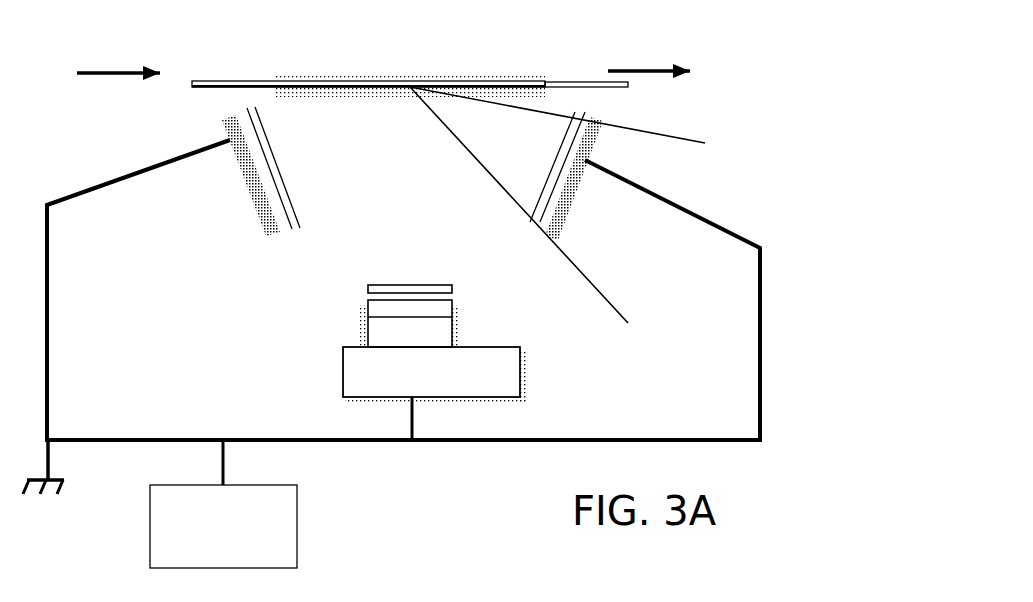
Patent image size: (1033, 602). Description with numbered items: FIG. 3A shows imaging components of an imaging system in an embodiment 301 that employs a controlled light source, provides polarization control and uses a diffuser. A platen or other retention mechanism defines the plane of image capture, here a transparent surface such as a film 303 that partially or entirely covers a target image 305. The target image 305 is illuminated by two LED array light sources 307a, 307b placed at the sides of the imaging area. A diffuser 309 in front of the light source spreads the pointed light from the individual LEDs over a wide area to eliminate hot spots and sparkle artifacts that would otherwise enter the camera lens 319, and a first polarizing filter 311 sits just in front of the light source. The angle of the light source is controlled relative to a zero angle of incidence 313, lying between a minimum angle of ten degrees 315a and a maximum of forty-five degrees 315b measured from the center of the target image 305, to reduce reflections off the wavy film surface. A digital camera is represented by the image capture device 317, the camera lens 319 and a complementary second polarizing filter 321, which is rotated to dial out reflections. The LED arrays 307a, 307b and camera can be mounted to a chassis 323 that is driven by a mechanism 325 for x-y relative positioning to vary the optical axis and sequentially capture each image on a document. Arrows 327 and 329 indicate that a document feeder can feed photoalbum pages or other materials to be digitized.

The embodiment 301 is at (337, 52).
The transparent surface 303 is at (267, 73).
The target image 305 is at (413, 75).
The LED array light source 307a is at (233, 182).
The LED array light source 307b is at (580, 176).
The diffuser 309 is at (288, 232).
The first polarizing filter 311 is at (298, 232).
The zero angle of incidence 313 is at (628, 86).
The minimum angle of incidence 315a is at (584, 120).
The maximum angle of incidence 315b is at (547, 212).
The image capture device 317 is at (325, 375).
The camera lens 319 is at (353, 332).
The second polarizing filter 321 is at (353, 291).
The chassis 323 is at (345, 447).
The mechanism for x-y relative positioning 325 is at (295, 527).
The document feed arrow 327 is at (115, 72).
The document feed arrow 329 is at (623, 65).